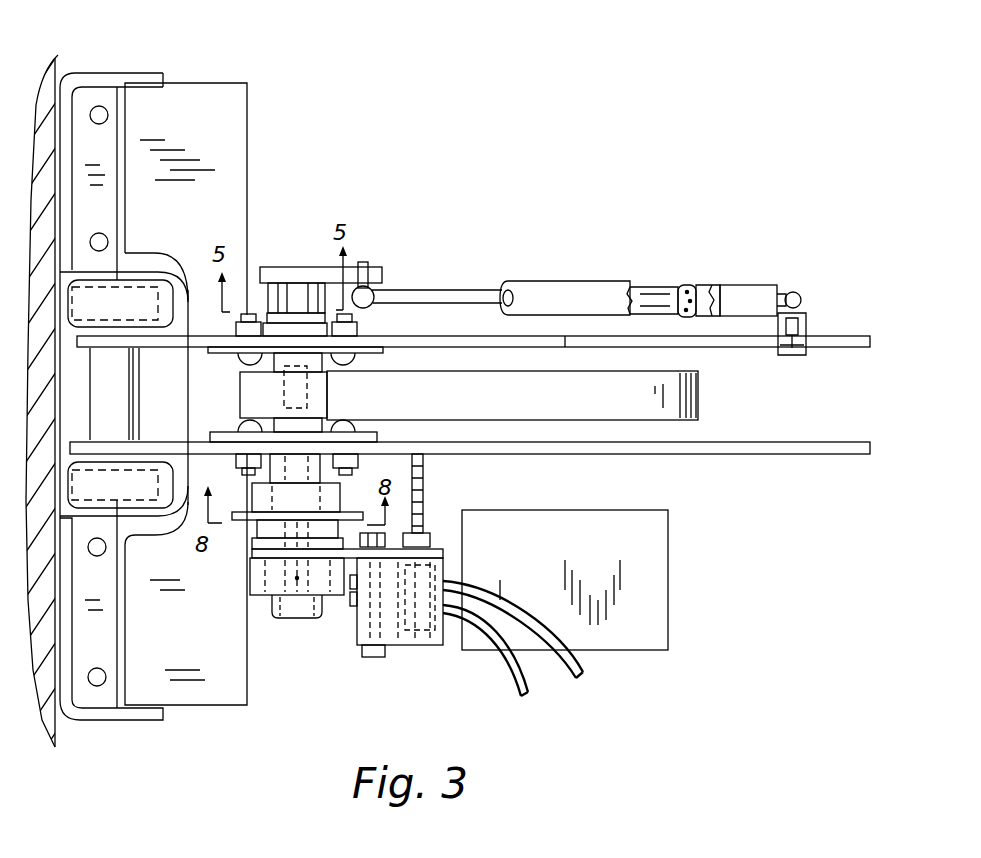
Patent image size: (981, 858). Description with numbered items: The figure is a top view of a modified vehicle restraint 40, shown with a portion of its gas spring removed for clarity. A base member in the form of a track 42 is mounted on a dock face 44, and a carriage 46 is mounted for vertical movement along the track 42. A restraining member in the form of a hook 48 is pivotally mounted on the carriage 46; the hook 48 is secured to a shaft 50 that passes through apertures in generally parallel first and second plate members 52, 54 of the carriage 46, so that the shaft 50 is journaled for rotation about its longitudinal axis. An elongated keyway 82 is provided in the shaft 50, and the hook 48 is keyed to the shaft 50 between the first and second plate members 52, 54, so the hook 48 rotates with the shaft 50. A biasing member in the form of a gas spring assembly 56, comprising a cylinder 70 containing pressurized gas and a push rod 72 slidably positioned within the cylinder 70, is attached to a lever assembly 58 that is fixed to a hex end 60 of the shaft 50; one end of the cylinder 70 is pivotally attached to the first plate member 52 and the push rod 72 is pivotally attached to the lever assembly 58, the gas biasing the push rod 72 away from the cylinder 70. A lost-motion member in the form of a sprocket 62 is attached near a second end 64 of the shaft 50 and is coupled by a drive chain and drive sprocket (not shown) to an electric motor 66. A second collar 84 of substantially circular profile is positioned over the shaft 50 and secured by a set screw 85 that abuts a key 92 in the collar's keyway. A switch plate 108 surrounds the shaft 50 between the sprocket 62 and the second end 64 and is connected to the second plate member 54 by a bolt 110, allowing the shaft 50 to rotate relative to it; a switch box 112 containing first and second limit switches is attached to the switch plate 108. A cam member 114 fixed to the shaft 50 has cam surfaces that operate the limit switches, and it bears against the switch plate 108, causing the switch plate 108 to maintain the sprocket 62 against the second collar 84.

The vehicle restraint 40 is at (432, 98).
The track 42 is at (152, 268).
The dock face 44 is at (53, 68).
The carriage 46 is at (730, 458).
The hook 48 is at (696, 392).
The shaft 50 is at (302, 476).
The first plate member 52 is at (847, 343).
The second plate member 54 is at (835, 450).
The gas spring assembly 56 is at (653, 280).
The lever assembly 58 is at (316, 215).
The hex end 60 is at (259, 250).
The sprocket 62 is at (432, 540).
The second end 64 is at (298, 616).
The electric motor 66 is at (638, 597).
The cylinder 70 is at (602, 283).
The push rod 72 is at (450, 292).
The keyway 82 is at (303, 423).
The second collar 84 is at (263, 488).
The set screw 85 is at (262, 586).
The key 92 is at (297, 504).
The switch plate 108 is at (443, 552).
The bolt 110 is at (425, 507).
The switch box 112 is at (403, 632).
The cam member 114 is at (265, 595).